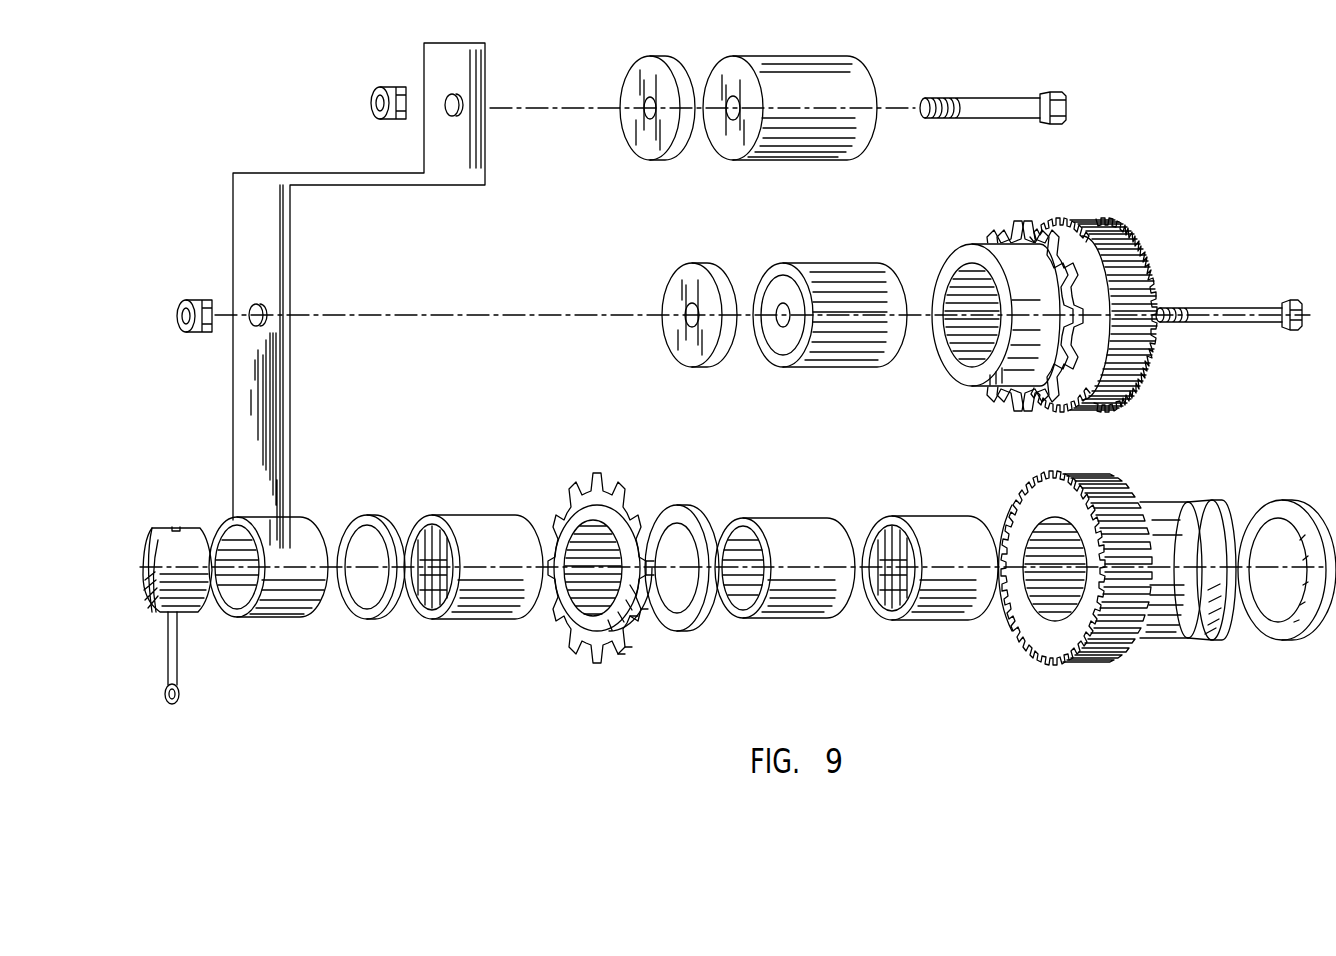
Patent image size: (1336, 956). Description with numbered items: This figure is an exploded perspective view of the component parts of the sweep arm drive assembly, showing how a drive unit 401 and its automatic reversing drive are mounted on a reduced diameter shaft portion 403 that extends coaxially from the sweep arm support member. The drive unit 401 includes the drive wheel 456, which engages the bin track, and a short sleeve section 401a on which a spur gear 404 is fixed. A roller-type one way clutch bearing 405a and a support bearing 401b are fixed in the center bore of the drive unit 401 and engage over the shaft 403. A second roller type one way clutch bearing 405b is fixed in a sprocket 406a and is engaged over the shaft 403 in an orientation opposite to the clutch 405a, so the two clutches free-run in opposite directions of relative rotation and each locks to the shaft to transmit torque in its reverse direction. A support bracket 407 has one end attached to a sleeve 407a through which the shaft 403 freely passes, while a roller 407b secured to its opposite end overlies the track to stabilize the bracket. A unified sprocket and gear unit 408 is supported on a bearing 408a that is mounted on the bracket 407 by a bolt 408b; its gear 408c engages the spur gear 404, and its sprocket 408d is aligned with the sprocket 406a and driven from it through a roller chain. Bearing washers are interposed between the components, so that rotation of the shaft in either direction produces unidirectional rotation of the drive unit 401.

The drive unit 401 is at (1150, 644).
The short sleeve section 401a is at (1150, 512).
The support bearing 401b is at (775, 523).
The reduced diameter shaft portion 403 is at (189, 530).
The spur gear 404 is at (1090, 482).
The roller-type one way clutch bearing 405a is at (925, 518).
The second roller type one way clutch bearing 405b is at (465, 518).
The sprocket 406a is at (636, 628).
The support bracket 407 is at (280, 240).
The sleeve 407a is at (285, 605).
The roller 407b is at (800, 62).
The unified sprocket and gear unit 408 is at (1117, 298).
The bearing 408a is at (830, 265).
The bolt 408b is at (1228, 312).
The gear 408c is at (1162, 281).
The sprocket 408d is at (1020, 237).
The drive wheel 456 is at (1205, 520).